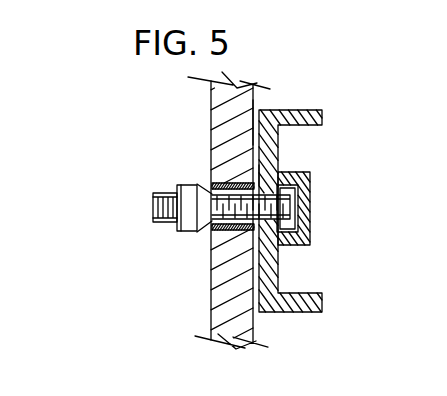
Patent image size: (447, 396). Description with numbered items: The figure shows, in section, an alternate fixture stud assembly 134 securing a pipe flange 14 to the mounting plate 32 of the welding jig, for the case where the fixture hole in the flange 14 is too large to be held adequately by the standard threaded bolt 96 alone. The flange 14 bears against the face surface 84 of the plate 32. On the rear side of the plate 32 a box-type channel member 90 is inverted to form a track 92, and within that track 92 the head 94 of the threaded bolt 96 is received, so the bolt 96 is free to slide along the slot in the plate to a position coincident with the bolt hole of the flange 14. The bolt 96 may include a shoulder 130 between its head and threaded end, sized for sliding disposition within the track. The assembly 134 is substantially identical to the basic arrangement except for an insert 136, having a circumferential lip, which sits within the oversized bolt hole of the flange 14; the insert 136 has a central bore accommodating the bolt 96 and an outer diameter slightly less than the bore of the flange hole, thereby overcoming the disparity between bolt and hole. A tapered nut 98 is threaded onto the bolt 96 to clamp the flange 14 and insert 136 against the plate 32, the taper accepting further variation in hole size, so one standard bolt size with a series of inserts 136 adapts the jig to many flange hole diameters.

The flange 14 is at (217, 138).
The face surface 84 is at (253, 122).
The insert 136 is at (224, 184).
The mounting plate 32 is at (324, 117).
The shoulder 130 is at (258, 175).
The box-type channel member 90 is at (310, 200).
The track 92 is at (310, 174).
The head 94 is at (310, 220).
The fixture stud assembly 134 is at (143, 208).
The threaded bolt 96 is at (157, 193).
The tapered nut 98 is at (184, 231).